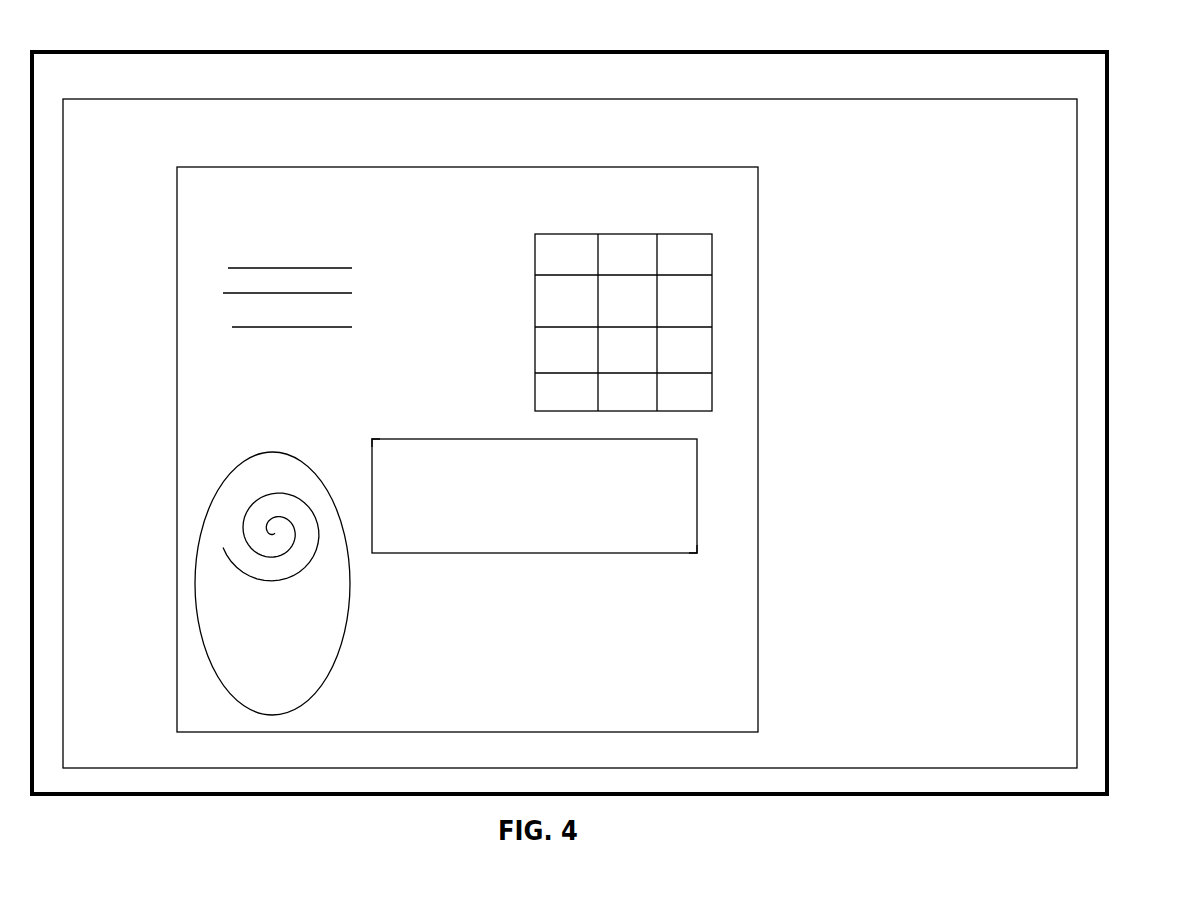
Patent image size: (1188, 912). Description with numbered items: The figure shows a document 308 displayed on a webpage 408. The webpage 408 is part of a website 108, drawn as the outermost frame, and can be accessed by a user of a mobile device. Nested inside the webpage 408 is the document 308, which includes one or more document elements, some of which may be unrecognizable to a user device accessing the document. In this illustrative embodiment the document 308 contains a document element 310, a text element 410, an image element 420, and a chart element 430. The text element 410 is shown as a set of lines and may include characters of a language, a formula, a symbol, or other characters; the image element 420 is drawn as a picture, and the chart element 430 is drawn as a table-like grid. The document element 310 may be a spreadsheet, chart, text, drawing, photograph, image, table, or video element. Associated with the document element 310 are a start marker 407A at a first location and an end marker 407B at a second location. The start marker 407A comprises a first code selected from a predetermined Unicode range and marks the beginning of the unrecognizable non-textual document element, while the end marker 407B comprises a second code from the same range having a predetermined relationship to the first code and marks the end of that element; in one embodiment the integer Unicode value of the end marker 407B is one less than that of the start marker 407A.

The website 108 is at (367, 50).
The webpage 408 is at (1075, 243).
The document 308 is at (338, 166).
The document element 310 is at (591, 555).
The start marker 407A is at (372, 439).
The end marker 407B is at (697, 553).
The text element 410 is at (229, 293).
The image element 420 is at (218, 675).
The chart element 430 is at (709, 333).